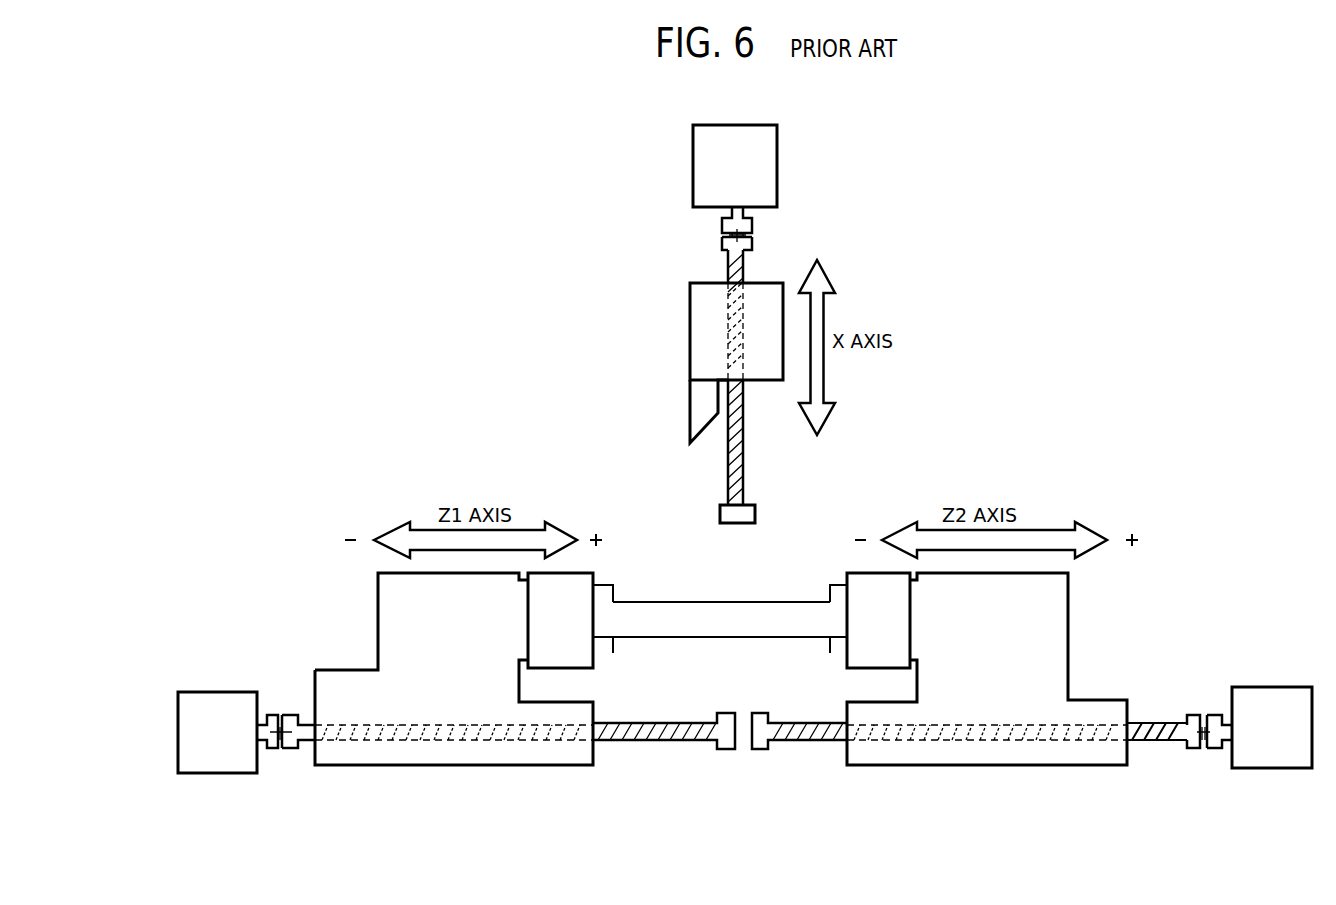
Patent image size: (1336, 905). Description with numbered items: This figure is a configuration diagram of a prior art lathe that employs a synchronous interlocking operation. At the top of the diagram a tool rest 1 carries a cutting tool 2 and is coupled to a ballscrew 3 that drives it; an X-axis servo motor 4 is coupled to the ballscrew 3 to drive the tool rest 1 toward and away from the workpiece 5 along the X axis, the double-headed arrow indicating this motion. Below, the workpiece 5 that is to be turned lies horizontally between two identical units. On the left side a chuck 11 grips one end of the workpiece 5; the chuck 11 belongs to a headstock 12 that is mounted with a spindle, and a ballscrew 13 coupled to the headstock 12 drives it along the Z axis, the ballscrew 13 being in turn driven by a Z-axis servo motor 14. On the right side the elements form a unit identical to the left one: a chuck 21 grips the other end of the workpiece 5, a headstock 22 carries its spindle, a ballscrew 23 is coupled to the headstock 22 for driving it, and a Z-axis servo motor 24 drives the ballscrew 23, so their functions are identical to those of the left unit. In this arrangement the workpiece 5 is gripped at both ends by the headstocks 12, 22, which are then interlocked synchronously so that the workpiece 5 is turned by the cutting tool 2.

The tool rest 1 is at (690, 312).
The cutting tool 2 is at (690, 407).
The ballscrew 3 is at (737, 386).
The X-axis servo motor 4 is at (780, 153).
The workpiece 5 is at (732, 630).
The chuck 11 is at (592, 576).
The headstock 12 is at (378, 592).
The ballscrew 13 is at (727, 749).
The Z-axis servo motor 14 is at (233, 773).
The chuck 21 is at (850, 577).
The headstock 22 is at (1068, 590).
The ballscrew 23 is at (762, 749).
The Z-axis servo motor 24 is at (1257, 768).